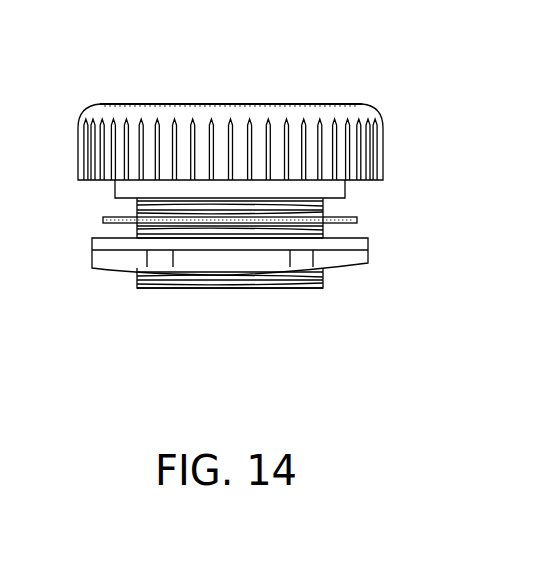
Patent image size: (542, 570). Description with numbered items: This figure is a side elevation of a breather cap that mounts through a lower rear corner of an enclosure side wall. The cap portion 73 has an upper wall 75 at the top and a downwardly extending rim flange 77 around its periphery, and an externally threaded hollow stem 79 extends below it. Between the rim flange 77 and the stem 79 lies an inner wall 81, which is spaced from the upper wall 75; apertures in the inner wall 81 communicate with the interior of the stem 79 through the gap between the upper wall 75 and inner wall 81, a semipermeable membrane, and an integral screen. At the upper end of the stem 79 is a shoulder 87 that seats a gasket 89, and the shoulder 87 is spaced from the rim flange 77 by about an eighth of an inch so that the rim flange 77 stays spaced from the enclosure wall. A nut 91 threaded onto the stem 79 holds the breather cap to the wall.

The cap portion 73 is at (88, 110).
The upper wall 75 is at (163, 107).
The rim flange 77 is at (82, 142).
The inner wall 81 is at (120, 192).
The shoulder 87 is at (345, 198).
The gasket 89 is at (120, 222).
The nut 91 is at (103, 267).
The externally threaded hollow stem 79 is at (300, 283).